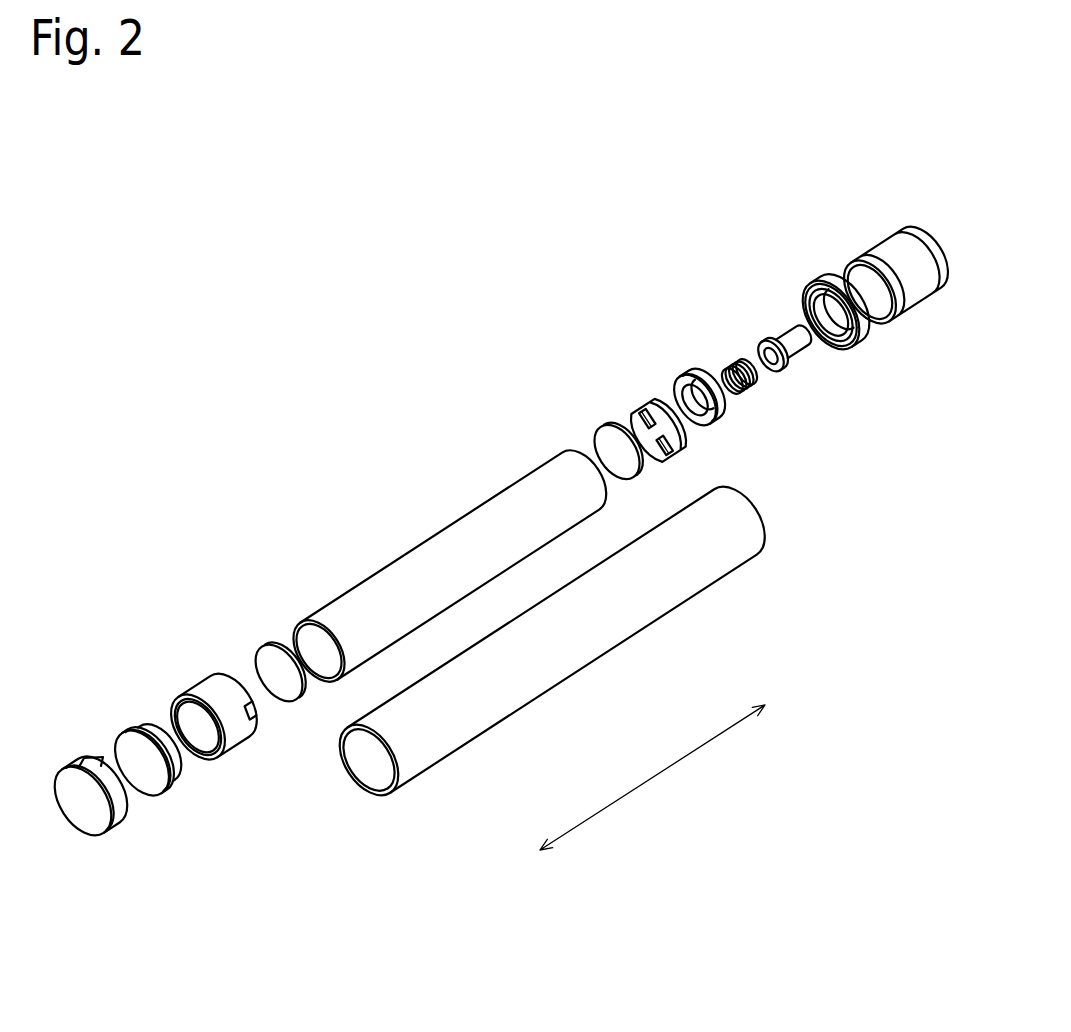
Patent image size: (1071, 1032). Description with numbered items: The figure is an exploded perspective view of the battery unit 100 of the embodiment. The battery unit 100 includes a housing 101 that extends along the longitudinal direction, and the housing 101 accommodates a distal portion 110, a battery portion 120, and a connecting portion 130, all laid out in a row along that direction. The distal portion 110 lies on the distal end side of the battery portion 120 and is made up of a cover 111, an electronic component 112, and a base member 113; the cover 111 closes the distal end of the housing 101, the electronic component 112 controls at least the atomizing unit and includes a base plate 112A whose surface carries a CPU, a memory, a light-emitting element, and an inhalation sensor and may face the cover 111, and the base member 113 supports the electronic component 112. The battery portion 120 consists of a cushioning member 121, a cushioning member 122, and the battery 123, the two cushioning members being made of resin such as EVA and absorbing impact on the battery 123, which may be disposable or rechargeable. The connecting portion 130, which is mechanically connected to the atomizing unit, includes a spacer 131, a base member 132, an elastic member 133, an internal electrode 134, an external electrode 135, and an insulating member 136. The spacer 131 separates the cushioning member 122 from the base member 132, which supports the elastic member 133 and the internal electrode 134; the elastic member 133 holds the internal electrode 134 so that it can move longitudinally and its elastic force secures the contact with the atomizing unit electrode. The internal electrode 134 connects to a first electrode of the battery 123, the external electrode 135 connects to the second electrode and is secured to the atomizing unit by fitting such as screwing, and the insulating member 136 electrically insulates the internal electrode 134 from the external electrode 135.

The battery unit 100 is at (451, 191).
The housing 101 is at (418, 753).
The distal portion 110 is at (168, 592).
The cover 111 is at (103, 773).
The electronic component 112 is at (152, 730).
The base plate 112A is at (148, 780).
The base member 113 is at (208, 692).
The battery portion 120 is at (548, 345).
The cushioning member 121 is at (277, 660).
The cushioning member 122 is at (610, 437).
The battery 123 is at (450, 533).
The connecting portion 130 is at (846, 146).
The spacer 131 is at (653, 393).
The base member 132 is at (697, 370).
The elastic member 133 is at (740, 350).
The internal electrode 134 is at (787, 340).
The external electrode 135 is at (877, 250).
The insulating member 136 is at (827, 282).